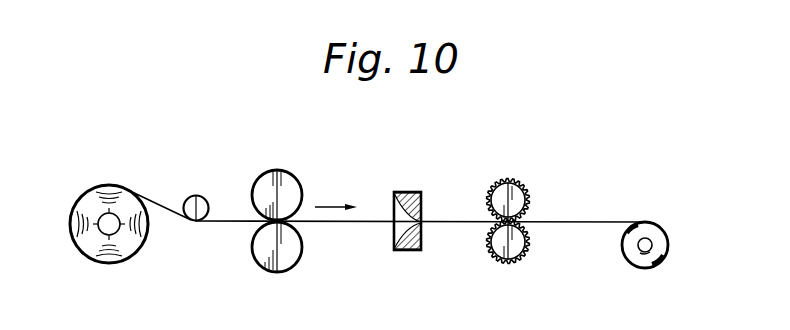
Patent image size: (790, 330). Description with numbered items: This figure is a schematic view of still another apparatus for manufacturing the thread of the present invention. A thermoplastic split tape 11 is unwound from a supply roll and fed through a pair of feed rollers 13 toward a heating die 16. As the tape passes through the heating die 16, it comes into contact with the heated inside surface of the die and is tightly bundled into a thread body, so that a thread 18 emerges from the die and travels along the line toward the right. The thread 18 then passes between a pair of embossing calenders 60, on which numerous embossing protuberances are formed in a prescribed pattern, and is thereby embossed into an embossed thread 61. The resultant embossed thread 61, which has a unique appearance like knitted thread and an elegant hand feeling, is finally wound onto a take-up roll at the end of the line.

The thermoplastic split tape 11 is at (153, 199).
The pair of feed rollers 13 is at (277, 169).
The heating die 16 is at (408, 192).
The thread 18 is at (458, 221).
The pair of embossing calenders 60 is at (503, 178).
The embossed thread 61 is at (578, 220).